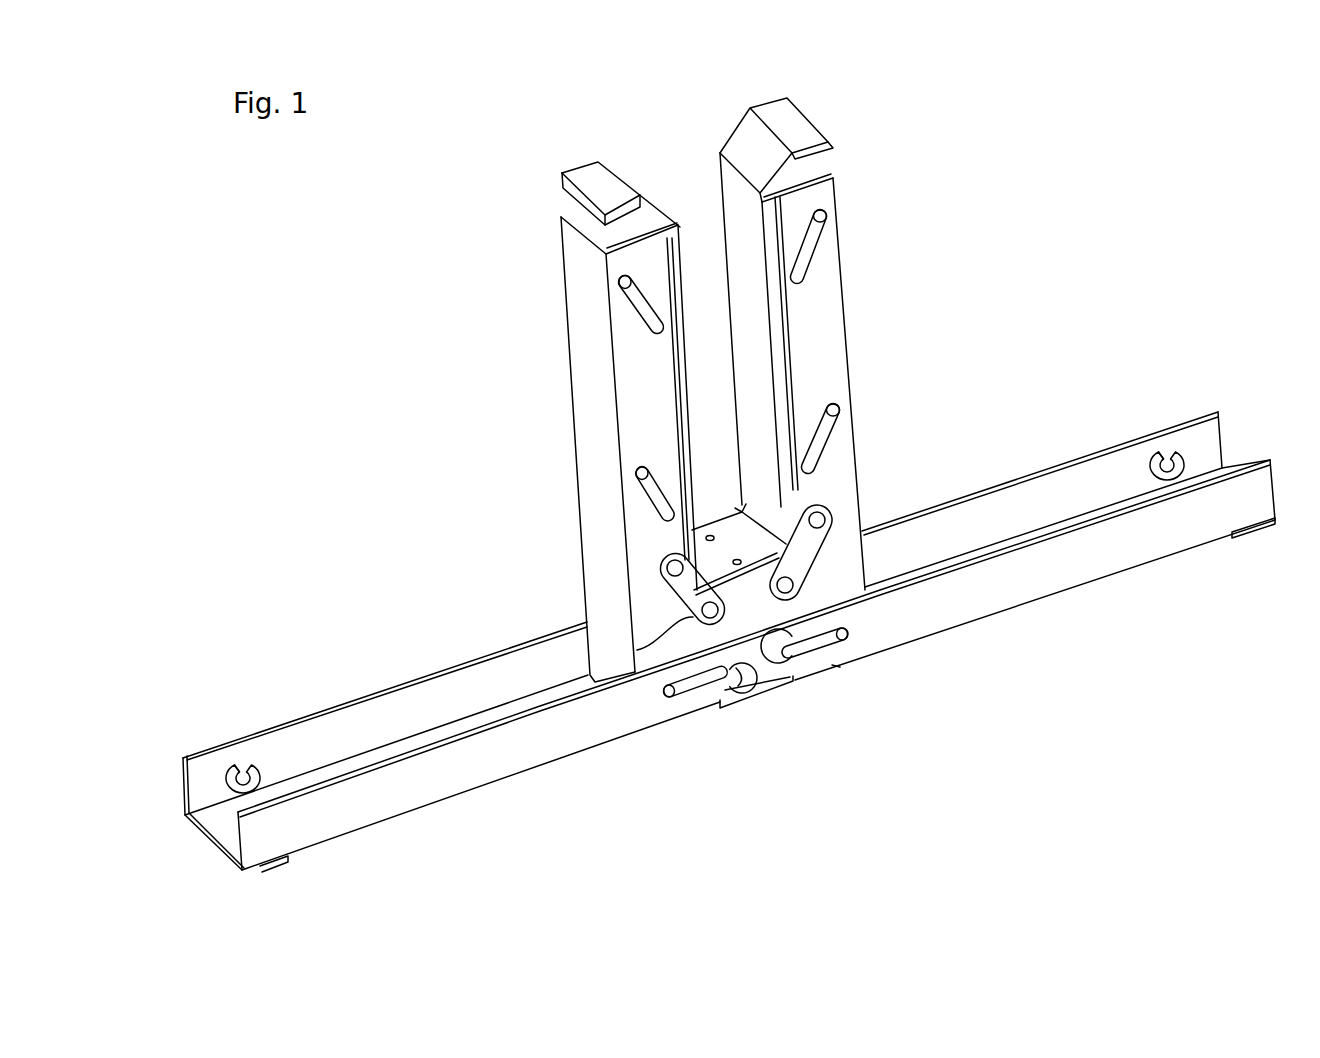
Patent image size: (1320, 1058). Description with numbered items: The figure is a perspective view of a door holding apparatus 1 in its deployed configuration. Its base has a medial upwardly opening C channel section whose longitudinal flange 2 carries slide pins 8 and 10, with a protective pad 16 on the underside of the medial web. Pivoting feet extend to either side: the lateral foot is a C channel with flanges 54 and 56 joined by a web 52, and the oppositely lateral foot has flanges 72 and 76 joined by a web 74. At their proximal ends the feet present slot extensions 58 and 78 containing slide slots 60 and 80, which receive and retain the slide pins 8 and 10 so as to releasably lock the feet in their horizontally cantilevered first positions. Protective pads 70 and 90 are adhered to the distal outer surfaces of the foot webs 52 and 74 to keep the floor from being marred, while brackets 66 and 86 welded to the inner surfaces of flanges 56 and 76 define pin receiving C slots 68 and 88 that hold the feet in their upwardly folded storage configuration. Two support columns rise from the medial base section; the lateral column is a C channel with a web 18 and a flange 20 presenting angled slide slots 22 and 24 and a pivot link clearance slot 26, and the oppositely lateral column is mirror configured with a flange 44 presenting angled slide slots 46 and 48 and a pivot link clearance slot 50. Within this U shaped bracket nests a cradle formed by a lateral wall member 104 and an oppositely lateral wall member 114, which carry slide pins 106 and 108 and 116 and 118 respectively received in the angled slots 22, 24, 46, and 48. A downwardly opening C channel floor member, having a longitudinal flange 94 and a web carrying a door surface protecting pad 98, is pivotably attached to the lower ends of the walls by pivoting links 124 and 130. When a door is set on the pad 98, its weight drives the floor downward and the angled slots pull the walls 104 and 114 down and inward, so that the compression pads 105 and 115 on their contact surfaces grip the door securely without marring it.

The door holding apparatus 1 is at (961, 364).
The longitudinal flange 2 is at (769, 716).
The slide pin 8 is at (673, 700).
The slide pin 10 is at (862, 667).
The protective pad 16 is at (780, 690).
The web 18 is at (574, 405).
The flange 20 is at (653, 402).
The angled slide slot 22 is at (575, 316).
The angled slide slot 24 is at (593, 515).
The pivot link clearance slot 26 is at (590, 640).
The flange 44 is at (817, 339).
The angled slide slot 46 is at (845, 240).
The angled slide slot 48 is at (860, 427).
The pivot link clearance slot 50 is at (895, 528).
The web 52 is at (721, 680).
The flange 54 is at (467, 770).
The flange 56 is at (352, 702).
The slot extension 58 is at (737, 703).
The slide slot 60 is at (700, 690).
The bracket 66 is at (236, 764).
The pin receiving C slot 68 is at (250, 766).
The protective pad 70 is at (263, 864).
The flange 72 is at (1018, 546).
The web 74 is at (1233, 467).
The flange 76 is at (1071, 461).
The slot extension 78 is at (813, 670).
The slide slot 80 is at (830, 641).
The bracket 86 is at (1183, 448).
The pin receiving C slot 88 is at (1156, 444).
The protective pad 90 is at (1267, 528).
The longitudinal flange 94 is at (800, 612).
The door surface protecting pad 98 is at (723, 548).
The lateral wall member 104 is at (575, 210).
The compression pad 105 is at (597, 180).
The slide pin 106 is at (622, 283).
The slide pin 108 is at (640, 477).
The oppositely lateral wall member 114 is at (808, 172).
The compression pad 115 is at (782, 113).
The slide pin 116 is at (827, 220).
The slide pin 118 is at (837, 410).
The pivoting link 124 is at (685, 587).
The pivoting link 130 is at (833, 520).